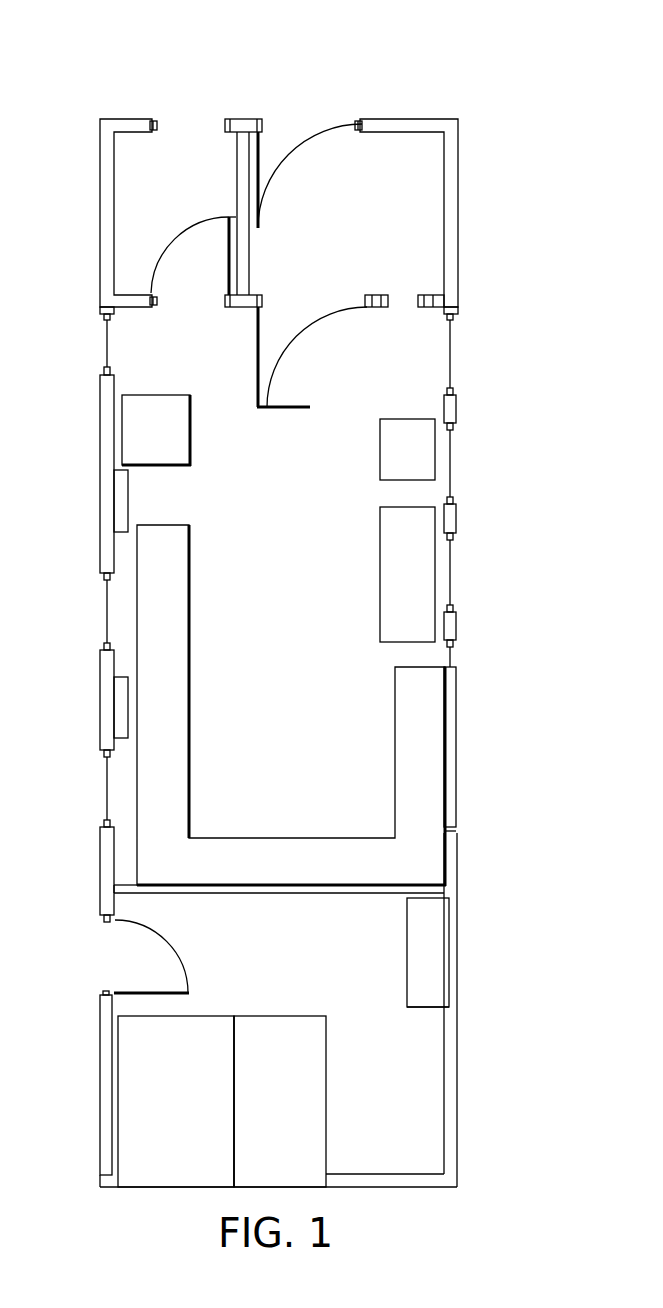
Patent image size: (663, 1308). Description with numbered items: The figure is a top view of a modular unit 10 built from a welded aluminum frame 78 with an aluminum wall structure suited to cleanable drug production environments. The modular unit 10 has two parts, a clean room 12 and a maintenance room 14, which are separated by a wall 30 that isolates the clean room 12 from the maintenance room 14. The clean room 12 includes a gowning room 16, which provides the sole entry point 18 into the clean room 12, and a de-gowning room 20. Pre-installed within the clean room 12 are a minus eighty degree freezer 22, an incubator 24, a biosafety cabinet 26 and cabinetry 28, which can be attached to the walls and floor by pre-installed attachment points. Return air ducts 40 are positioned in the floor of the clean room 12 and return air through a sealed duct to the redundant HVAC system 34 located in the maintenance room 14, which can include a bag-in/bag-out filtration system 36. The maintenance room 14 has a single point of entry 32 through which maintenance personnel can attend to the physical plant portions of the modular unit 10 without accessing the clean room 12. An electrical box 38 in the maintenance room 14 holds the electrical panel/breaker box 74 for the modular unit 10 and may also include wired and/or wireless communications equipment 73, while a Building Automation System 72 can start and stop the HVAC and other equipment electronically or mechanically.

The modular unit 10 is at (116, 83).
The clean room 12 is at (481, 491).
The maintenance room 14 is at (294, 978).
The gowning room 16 is at (393, 253).
The entry point 18 is at (305, 146).
The de-gowning room 20 is at (181, 195).
The −80° C. freezer 22 is at (153, 393).
The incubator 24 is at (407, 419).
The biosafety cabinet 26 is at (388, 570).
The cabinetry 28 is at (298, 847).
The wall 30 is at (476, 893).
The single point of entry 32 is at (102, 966).
The redundant HVAC system 34 is at (191, 1118).
The bag-in/bag-out filtration system 36 is at (294, 1118).
The electrical box 38 is at (416, 955).
The return air ducts 40 is at (118, 500).
The Building Automation System 72 is at (205, 1016).
The wired and/or wireless communications equipment 73 is at (423, 905).
The electrical panel/breaker box 74 is at (407, 993).
The welded aluminum frame 78 is at (458, 1140).